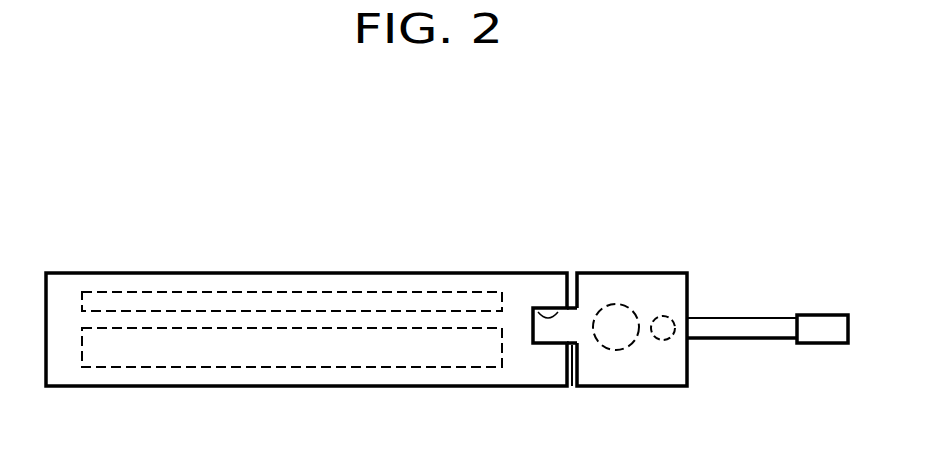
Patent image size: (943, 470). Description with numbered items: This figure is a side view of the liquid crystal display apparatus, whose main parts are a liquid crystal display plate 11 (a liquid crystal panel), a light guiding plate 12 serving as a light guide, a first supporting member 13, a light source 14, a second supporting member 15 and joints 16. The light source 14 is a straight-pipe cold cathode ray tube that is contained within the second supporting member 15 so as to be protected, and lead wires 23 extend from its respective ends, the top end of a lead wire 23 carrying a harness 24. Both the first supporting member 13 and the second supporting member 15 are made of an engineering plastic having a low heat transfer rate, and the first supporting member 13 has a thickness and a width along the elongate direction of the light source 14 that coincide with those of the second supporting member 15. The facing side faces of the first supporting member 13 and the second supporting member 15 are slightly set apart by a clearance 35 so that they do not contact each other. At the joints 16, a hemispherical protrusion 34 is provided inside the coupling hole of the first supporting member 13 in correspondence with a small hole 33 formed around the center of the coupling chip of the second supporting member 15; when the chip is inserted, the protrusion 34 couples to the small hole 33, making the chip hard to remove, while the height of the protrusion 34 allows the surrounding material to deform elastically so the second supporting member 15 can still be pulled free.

The liquid crystal display plate 11 is at (460, 292).
The light guiding plate 12 is at (468, 367).
The first supporting member 13 is at (235, 388).
The light source 14 is at (628, 347).
The second supporting member 15 is at (660, 367).
The joints 16 is at (580, 266).
The lead wires 23 is at (732, 318).
The harness 24 is at (822, 320).
The small hole 33 is at (547, 384).
The protrusion 34 is at (548, 320).
The clearance 35 is at (572, 386).